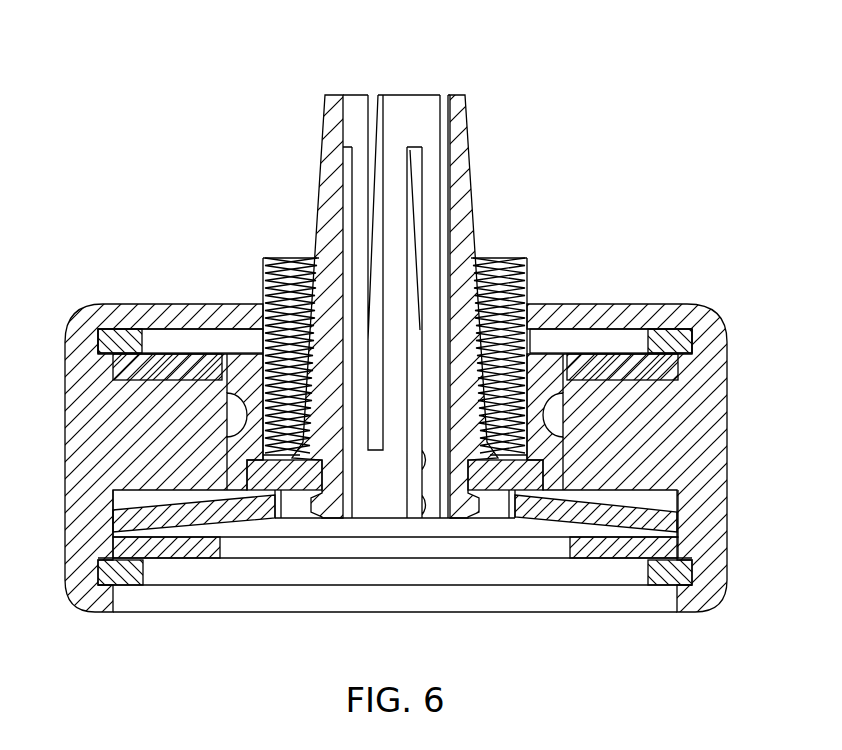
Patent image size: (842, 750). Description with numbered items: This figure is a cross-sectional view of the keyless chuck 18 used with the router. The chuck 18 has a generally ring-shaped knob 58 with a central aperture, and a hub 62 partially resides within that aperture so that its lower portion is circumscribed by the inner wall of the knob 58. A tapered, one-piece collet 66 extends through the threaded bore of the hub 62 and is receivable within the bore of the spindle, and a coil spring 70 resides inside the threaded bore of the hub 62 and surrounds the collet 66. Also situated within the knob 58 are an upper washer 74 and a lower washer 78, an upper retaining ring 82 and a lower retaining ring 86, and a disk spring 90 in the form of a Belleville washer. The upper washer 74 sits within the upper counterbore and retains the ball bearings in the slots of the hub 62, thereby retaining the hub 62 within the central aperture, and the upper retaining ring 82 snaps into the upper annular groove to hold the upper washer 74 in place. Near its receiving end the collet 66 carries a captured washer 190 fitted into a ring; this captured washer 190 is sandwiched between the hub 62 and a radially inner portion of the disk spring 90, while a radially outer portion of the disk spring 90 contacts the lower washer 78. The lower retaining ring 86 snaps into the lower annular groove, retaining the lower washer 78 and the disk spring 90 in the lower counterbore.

The chuck 18 is at (432, 275).
The knob 58 is at (727, 357).
The hub 62 is at (262, 280).
The collet 66 is at (333, 95).
The coil spring 70 is at (488, 305).
The upper washer 74 is at (615, 360).
The lower washer 78 is at (665, 545).
The upper retaining ring 82 is at (120, 340).
The lower retaining ring 86 is at (115, 572).
The disk spring 90 is at (150, 505).
The captured washer 190 is at (268, 477).